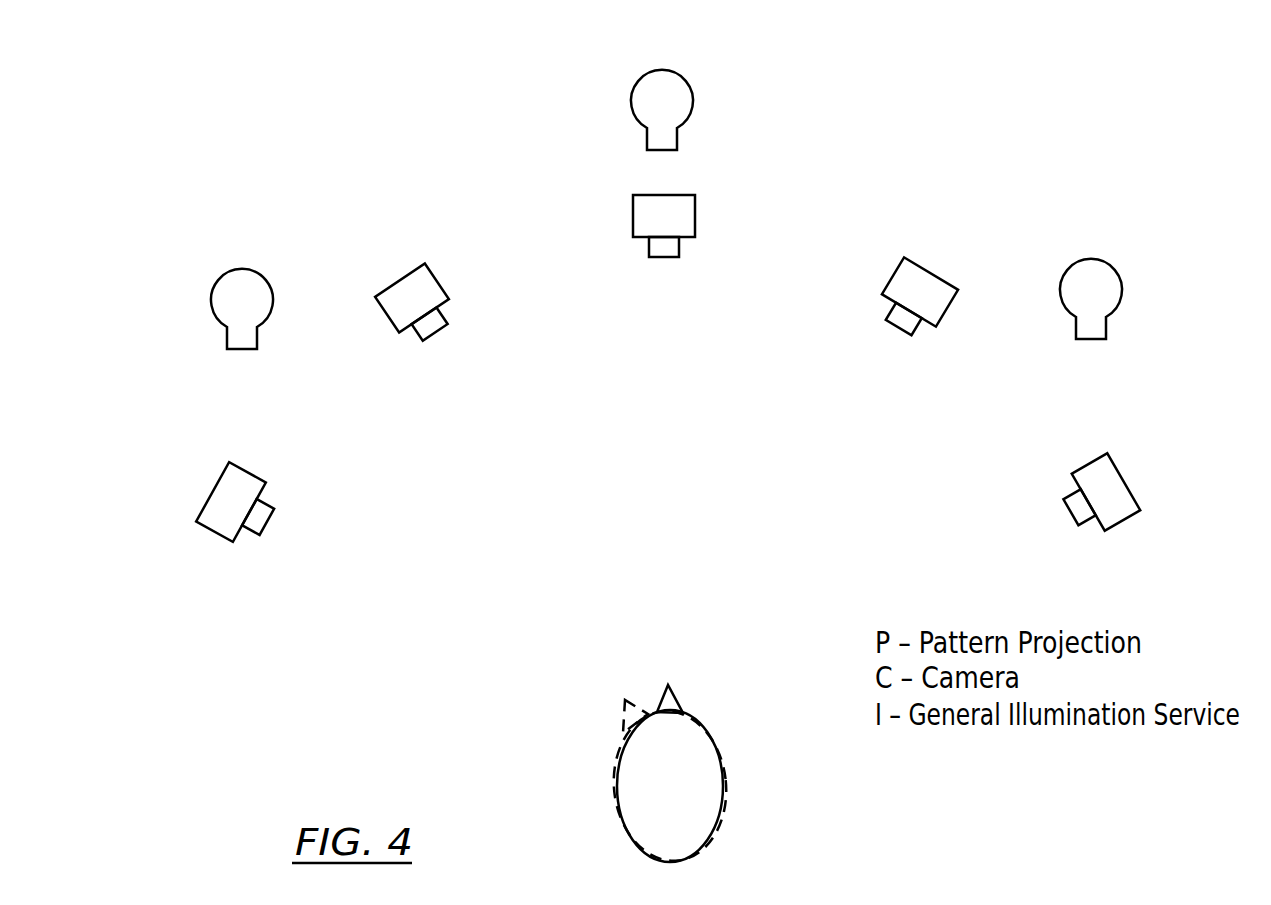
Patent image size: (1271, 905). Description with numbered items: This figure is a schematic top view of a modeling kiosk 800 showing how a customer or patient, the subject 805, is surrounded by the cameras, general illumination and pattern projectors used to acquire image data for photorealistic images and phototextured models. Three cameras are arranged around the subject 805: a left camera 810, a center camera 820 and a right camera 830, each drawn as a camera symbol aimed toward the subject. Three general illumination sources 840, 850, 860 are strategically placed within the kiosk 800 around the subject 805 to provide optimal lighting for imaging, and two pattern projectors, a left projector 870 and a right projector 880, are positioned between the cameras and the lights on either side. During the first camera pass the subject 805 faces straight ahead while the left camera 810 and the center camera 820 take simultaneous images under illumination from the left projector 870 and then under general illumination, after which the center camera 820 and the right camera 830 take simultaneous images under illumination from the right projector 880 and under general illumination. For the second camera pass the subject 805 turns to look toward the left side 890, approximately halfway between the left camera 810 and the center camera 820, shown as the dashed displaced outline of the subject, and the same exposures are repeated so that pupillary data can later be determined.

The kiosk 800 is at (378, 147).
The subject 805 is at (712, 742).
The left camera 810 is at (215, 493).
The center camera 820 is at (633, 218).
The right camera 830 is at (1090, 467).
The general illumination source 840 is at (240, 268).
The general illumination source 850 is at (658, 70).
The general illumination source 860 is at (1088, 260).
The left projector 870 is at (400, 282).
The right projector 880 is at (892, 275).
The left side 890 is at (617, 742).